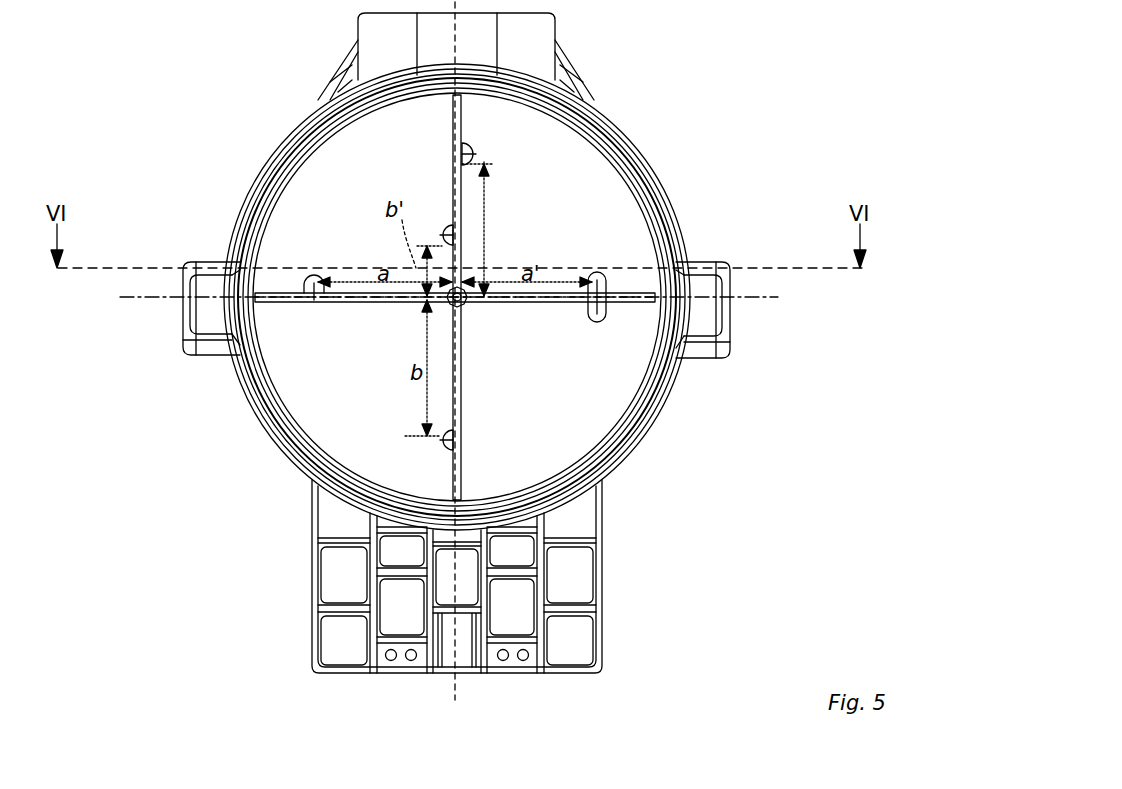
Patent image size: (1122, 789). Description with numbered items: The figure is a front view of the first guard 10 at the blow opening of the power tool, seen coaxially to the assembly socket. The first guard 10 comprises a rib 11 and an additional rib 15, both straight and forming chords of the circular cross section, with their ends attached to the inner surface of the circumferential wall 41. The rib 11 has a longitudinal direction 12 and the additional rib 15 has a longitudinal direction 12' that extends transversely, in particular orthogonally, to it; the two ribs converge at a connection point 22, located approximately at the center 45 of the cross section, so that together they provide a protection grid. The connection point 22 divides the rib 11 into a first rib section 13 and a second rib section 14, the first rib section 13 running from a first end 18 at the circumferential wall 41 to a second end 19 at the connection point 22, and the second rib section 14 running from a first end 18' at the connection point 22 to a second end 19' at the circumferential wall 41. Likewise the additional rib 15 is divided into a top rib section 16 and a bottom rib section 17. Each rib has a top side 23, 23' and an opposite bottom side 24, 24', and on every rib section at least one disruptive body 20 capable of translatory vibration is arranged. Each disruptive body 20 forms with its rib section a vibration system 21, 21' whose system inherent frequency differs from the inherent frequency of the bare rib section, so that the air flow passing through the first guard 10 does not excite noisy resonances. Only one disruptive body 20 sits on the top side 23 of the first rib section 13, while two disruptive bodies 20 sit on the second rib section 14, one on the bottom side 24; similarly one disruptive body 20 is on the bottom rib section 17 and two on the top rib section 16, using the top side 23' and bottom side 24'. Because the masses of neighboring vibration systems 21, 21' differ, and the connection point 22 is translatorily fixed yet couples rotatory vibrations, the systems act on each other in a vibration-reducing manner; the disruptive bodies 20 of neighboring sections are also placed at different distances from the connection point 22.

The first guard 10 is at (262, 192).
The rib 11 is at (452, 305).
The longitudinal direction 12 is at (795, 264).
The longitudinal direction 12' is at (501, 721).
The first rib section 13 is at (240, 260).
The second rib section 14 is at (680, 264).
The additional rib 15 is at (598, 522).
The top rib section 16 is at (466, 122).
The bottom rib section 17 is at (328, 540).
The first end 18 is at (365, 315).
The first end 18' is at (610, 297).
The second end 19 is at (220, 398).
The second end 19' is at (755, 354).
The disruptive body 20 is at (440, 243).
The vibration system 21 is at (260, 212).
The vibration system 21' is at (689, 233).
The connection point 22 is at (463, 306).
The top side 23 is at (166, 290).
The top side 23' is at (309, 507).
The bottom side 24 is at (182, 383).
The bottom side 24' is at (598, 489).
The circumferential wall 41 is at (312, 162).
The center 45 is at (470, 280).